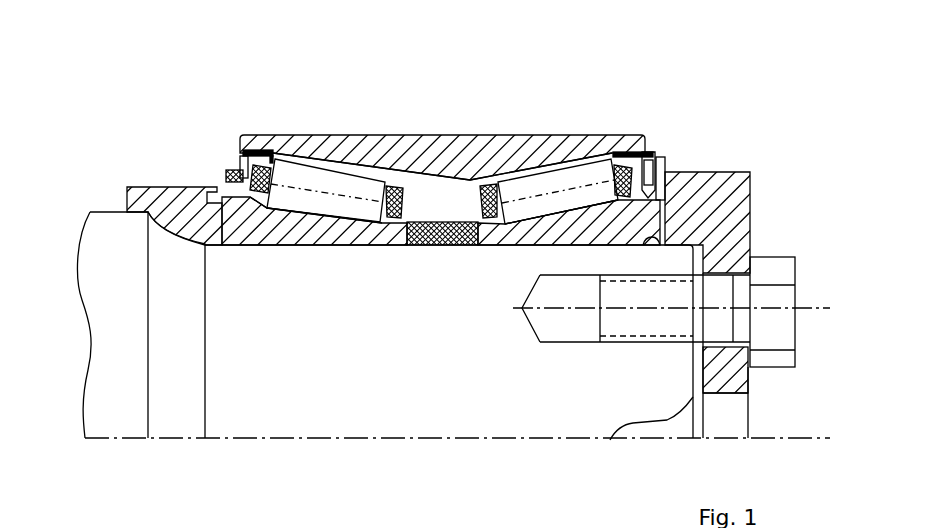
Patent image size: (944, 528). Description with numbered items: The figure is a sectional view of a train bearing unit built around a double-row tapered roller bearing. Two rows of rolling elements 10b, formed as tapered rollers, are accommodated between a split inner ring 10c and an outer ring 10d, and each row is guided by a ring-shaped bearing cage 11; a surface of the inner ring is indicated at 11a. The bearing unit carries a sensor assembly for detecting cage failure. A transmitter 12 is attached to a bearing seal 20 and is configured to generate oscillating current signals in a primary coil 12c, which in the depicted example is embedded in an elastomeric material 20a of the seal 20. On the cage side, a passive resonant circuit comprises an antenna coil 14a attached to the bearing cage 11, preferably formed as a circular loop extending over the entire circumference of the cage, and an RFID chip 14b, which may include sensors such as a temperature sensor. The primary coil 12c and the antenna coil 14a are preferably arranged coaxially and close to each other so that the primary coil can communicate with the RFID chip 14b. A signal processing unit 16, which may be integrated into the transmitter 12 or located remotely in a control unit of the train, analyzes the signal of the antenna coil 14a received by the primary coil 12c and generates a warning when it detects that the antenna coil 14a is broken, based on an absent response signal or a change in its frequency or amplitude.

The rolling elements 10b is at (340, 180).
The split inner ring 10c is at (520, 246).
The outer ring 10d is at (577, 135).
The bearing cage 11 is at (246, 155).
The inner raceway surface 11a is at (468, 172).
The transmitter 12 is at (662, 157).
The primary coil 12c is at (663, 173).
The antenna coil 14a is at (274, 157).
The RFID chip 14b is at (398, 187).
The signal processing unit 16 is at (703, 172).
The bearing seal 20 is at (650, 152).
The elastomeric material 20a is at (675, 180).